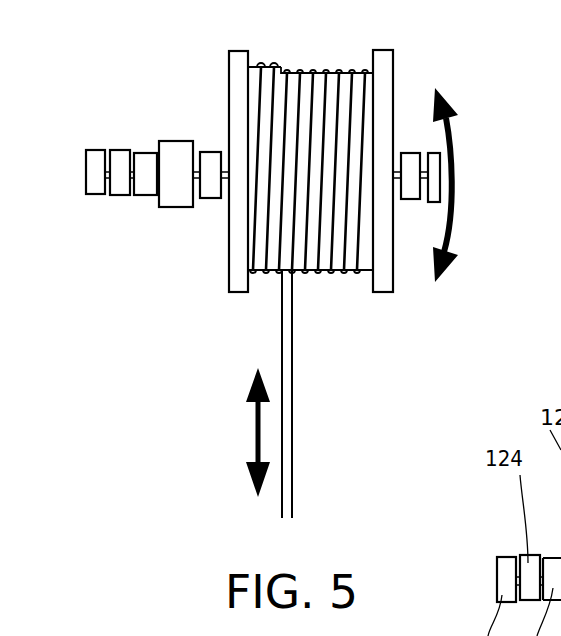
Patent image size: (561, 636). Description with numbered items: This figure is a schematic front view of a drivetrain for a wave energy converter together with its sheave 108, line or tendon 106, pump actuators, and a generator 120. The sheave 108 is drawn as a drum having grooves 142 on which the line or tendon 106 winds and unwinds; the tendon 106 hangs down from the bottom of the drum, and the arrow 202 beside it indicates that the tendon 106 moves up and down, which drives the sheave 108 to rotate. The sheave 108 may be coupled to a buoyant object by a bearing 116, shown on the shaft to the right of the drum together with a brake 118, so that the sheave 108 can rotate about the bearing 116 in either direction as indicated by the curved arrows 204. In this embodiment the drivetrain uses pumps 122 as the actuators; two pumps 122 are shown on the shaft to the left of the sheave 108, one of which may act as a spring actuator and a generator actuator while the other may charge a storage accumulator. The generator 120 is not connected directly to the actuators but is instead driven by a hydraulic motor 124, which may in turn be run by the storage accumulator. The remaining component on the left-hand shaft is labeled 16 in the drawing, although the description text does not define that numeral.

The motor 16 is at (208, 155).
The line or tendon 106 is at (273, 65).
The sheave 108 is at (390, 62).
The bearing 116 is at (413, 167).
The brake 118 is at (434, 202).
The generator 120 is at (96, 158).
The pump 122 is at (176, 157).
The hydraulic motor 124 is at (120, 160).
The grooves 142 is at (345, 270).
The arrow 202 is at (253, 440).
The arrows 204 is at (443, 103).